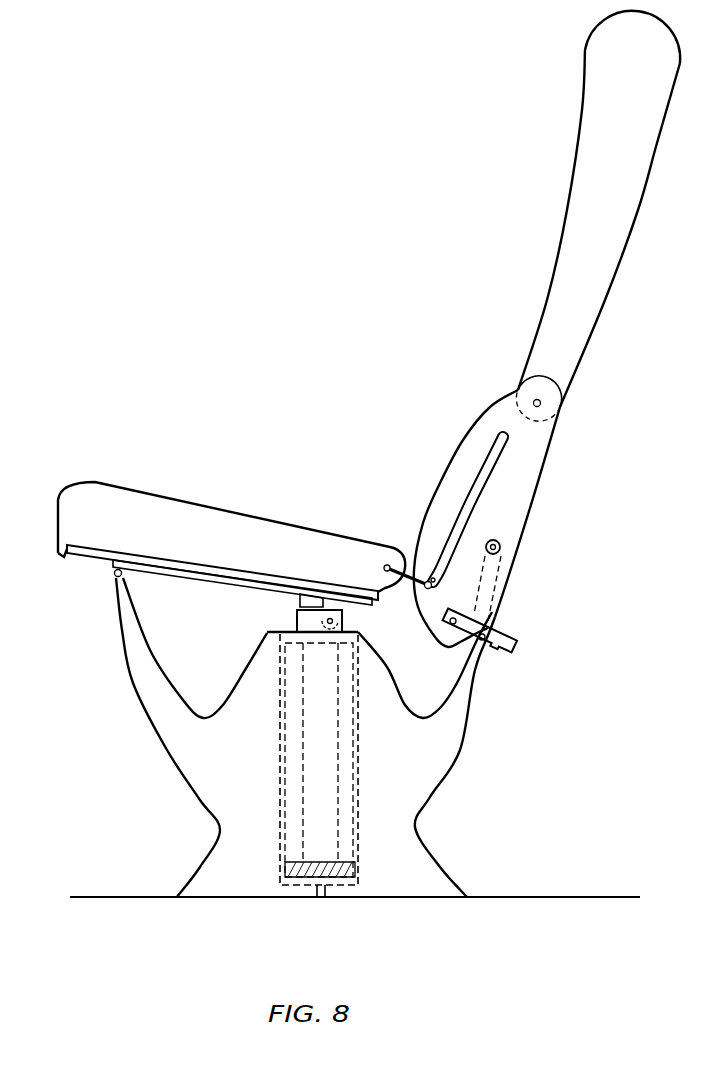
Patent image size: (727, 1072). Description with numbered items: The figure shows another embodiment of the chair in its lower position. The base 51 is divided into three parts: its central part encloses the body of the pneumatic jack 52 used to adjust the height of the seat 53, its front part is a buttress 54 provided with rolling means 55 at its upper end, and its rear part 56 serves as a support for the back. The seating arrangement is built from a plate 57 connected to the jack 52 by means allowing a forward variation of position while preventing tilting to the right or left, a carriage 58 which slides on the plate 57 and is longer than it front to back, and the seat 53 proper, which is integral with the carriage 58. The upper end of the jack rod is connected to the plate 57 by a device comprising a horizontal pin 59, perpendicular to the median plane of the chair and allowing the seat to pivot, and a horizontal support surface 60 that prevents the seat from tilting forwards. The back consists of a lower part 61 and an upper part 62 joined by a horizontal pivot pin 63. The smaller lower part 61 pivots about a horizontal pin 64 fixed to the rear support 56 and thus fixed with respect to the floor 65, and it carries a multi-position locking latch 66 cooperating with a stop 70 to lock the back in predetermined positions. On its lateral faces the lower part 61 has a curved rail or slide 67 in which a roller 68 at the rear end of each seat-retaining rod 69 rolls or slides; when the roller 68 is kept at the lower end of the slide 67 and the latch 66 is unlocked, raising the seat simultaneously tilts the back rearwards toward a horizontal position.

The base 51 is at (256, 869).
The pneumatic jack 52 is at (291, 622).
The seat 53 is at (240, 521).
The buttress 54 is at (118, 630).
The rolling means 55 is at (114, 574).
The rear part of the base 56 is at (478, 702).
The plate 57 is at (195, 582).
The carriage 58 is at (67, 552).
The horizontal pin 59 is at (345, 620).
The horizontal support surface 60 is at (300, 603).
The lower part of the back 61 is at (537, 506).
The upper part of the back 62 is at (620, 267).
The horizontal pivot pin 63 is at (542, 404).
The horizontal pin 64 is at (501, 549).
The floor 65 is at (500, 897).
The locking latch 66 is at (495, 625).
The curved rail or slide 67 is at (463, 478).
The roller 68 is at (433, 577).
The rod 69 is at (408, 588).
The stop 70 is at (476, 634).